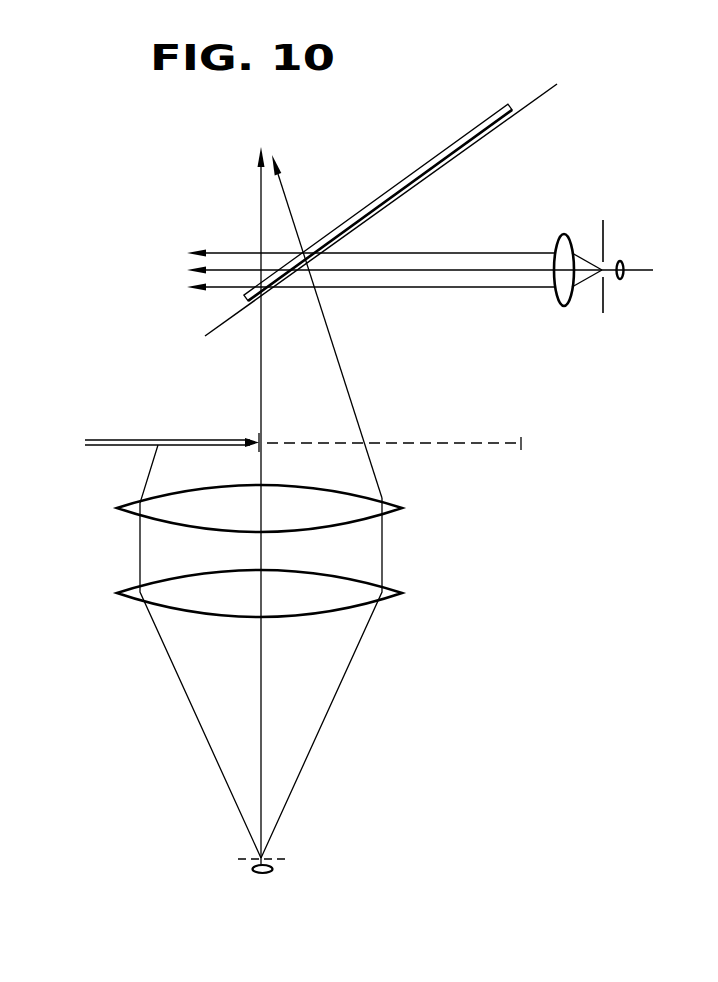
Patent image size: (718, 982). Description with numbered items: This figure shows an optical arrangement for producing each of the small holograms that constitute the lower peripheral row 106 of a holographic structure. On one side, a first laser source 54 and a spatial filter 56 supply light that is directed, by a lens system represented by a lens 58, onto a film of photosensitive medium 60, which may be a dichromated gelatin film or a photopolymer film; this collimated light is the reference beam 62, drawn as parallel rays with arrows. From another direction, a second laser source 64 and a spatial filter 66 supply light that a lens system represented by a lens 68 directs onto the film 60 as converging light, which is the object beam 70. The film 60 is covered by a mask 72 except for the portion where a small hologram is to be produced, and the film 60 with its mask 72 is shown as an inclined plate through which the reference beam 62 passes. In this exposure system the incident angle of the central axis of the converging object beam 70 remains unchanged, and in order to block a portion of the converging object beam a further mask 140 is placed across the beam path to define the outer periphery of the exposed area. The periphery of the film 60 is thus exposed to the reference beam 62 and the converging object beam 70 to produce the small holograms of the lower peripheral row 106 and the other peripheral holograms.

The first laser source 54 is at (643, 272).
The spatial filter 56 is at (627, 322).
The lens 58 is at (570, 243).
The film of photosensitive medium 60 is at (467, 134).
The reference beam 62 is at (192, 242).
The second laser source 64 is at (250, 882).
The spatial filter 66 is at (310, 843).
The lens 68 is at (422, 495).
The object beam 70 is at (352, 398).
The mask 72 is at (462, 152).
The lower peripheral row 106 is at (281, 298).
The mask 140 is at (190, 438).